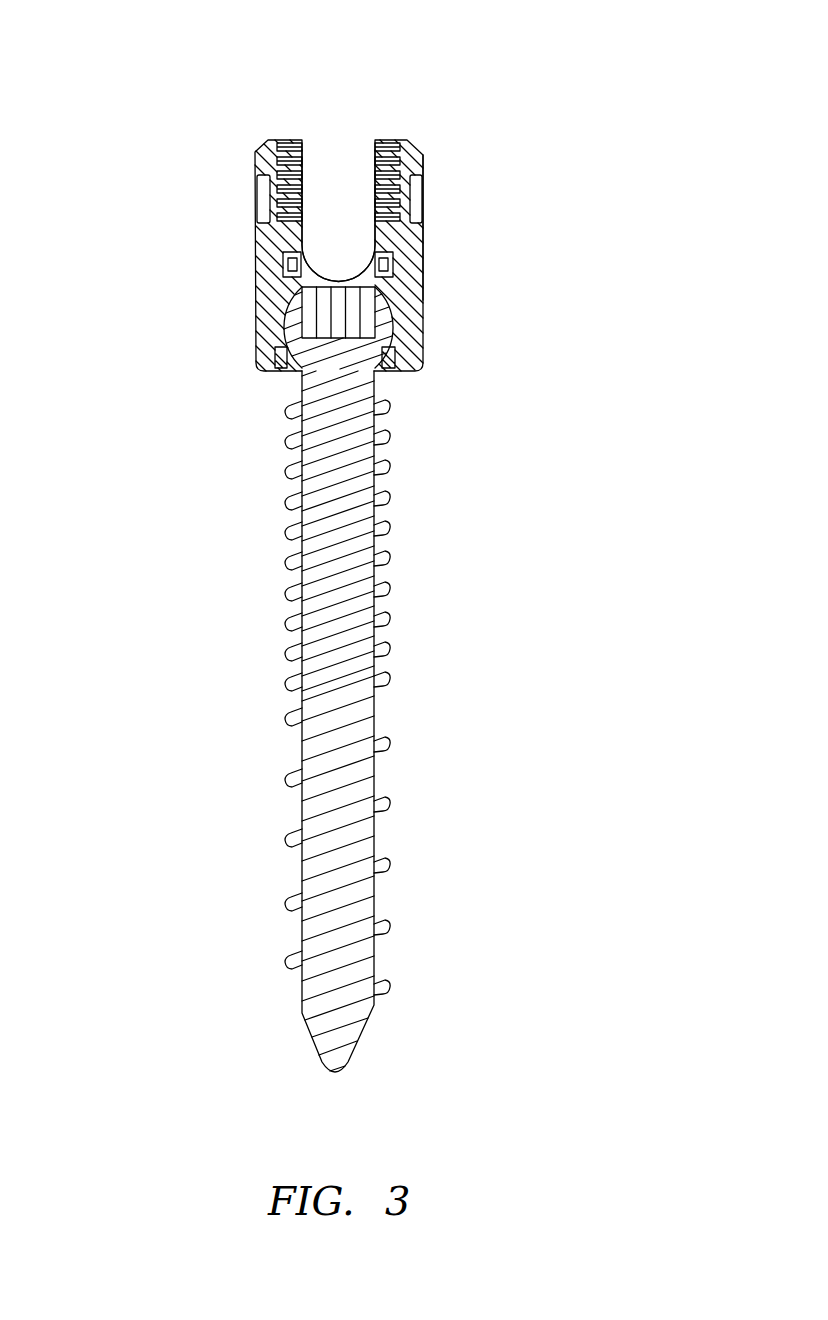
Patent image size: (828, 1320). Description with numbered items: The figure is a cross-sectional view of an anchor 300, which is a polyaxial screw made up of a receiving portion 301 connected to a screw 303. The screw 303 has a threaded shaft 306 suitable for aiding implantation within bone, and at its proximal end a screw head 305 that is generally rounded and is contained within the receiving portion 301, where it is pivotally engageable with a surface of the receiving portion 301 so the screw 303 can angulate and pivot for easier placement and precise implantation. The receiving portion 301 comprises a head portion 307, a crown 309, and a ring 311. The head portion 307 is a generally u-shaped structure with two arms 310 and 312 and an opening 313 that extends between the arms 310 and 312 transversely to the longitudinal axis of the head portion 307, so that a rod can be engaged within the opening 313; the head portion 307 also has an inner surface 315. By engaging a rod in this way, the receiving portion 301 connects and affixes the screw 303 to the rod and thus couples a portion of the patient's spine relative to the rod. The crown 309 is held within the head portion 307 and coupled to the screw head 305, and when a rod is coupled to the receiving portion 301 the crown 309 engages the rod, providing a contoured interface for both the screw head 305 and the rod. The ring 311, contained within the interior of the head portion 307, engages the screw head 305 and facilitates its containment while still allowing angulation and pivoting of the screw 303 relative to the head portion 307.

The anchor 300 is at (524, 57).
The receiving portion 301 is at (222, 188).
The screw 303 is at (237, 557).
The screw head 305 is at (331, 366).
The threaded shaft 306 is at (287, 683).
The head portion 307 is at (413, 155).
The crown 309 is at (283, 292).
The arm 310 is at (418, 240).
The ring 311 is at (275, 352).
The arm 312 is at (263, 243).
The opening 313 is at (351, 192).
The inner surface 315 is at (303, 163).